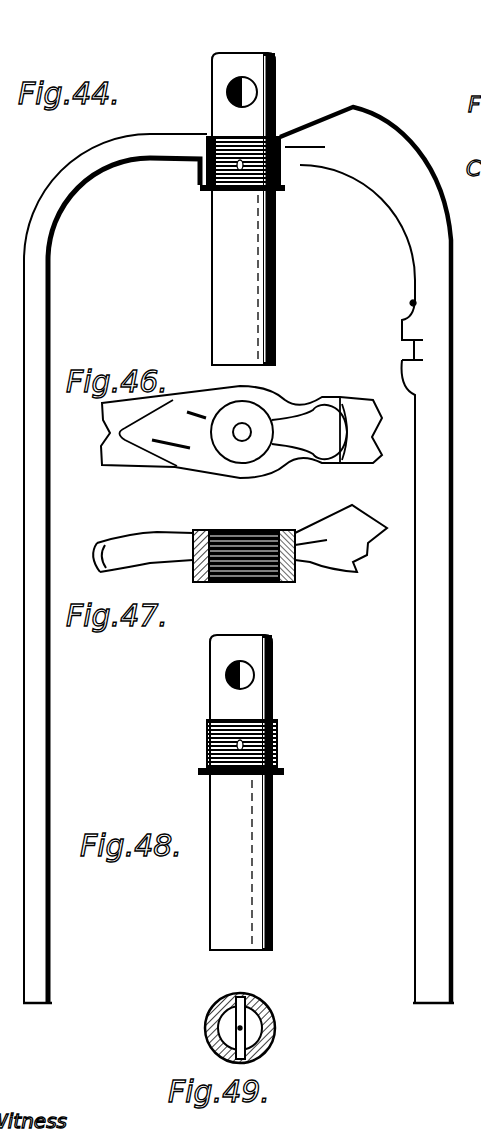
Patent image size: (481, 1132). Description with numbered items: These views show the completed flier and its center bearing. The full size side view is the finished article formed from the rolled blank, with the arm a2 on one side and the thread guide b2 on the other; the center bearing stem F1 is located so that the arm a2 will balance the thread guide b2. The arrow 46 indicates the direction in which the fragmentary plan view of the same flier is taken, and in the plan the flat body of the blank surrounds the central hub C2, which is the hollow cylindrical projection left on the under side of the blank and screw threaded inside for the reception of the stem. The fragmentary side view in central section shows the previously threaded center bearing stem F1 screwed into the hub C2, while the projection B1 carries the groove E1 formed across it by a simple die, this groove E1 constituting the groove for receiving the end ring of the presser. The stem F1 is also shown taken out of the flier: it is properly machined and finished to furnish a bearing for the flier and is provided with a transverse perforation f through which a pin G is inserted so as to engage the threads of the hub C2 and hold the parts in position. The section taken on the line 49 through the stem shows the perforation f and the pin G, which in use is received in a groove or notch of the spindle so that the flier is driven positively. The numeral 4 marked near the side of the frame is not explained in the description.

In FIG. 44, the arrow 46 is at (197, 58).
In FIG. 48, the section line 49— 49 is at (187, 750).
In FIG. 44, the frame 4 is at (480, 535).
In FIG. 44, the arm a2 is at (55, 758).
In FIG. 46, the arm a2 is at (112, 455).
In FIG. 47, the arm a2 is at (100, 560).
In FIG. 44, the thread guide b2 is at (418, 816).
In FIG. 44, the projection B1 is at (398, 318).
In FIG. 44, the groove E1 is at (406, 350).
In FIG. 44, the center bearing stem F1 is at (262, 280).
In FIG. 46, the center bearing stem F1 is at (243, 452).
In FIG. 48, the center bearing stem F1 is at (250, 870).
In FIG. 49, the center bearing stem F1 is at (207, 1037).
In FIG. 44, the hub C2 is at (204, 186).
In FIG. 47, the hub C2 is at (288, 572).
In FIG. 48, the pin G is at (240, 750).
In FIG. 49, the pin G is at (264, 1020).
In FIG. 49, the transverse perforation f is at (226, 1004).